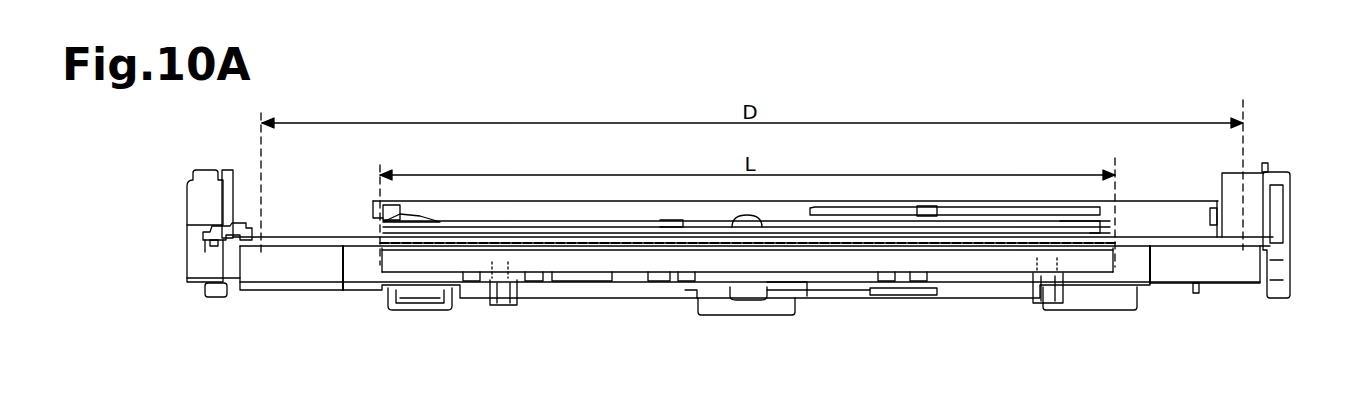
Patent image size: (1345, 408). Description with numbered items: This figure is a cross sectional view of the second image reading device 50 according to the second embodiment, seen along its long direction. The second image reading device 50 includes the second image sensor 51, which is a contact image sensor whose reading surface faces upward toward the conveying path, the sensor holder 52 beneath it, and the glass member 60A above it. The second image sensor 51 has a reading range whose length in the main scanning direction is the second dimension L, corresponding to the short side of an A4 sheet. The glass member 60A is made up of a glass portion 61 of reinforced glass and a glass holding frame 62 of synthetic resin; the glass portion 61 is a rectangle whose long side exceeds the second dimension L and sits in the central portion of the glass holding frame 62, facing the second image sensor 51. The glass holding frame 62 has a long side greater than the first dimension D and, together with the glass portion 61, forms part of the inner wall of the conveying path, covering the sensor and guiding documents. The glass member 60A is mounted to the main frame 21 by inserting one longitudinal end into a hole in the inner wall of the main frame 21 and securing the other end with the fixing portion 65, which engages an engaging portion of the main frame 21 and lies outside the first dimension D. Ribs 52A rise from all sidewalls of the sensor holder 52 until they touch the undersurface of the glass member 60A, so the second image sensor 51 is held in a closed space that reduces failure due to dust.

The main frame 21 is at (232, 203).
The fixing portion 65 is at (222, 221).
The glass holding frame 62 is at (290, 247).
The sensor holder 52 is at (250, 292).
The ribs 52A is at (338, 268).
The glass portion 61 is at (433, 240).
The second image sensor 51 is at (837, 262).
The second image reading device 50 is at (899, 294).
The glass member 60A is at (1163, 233).